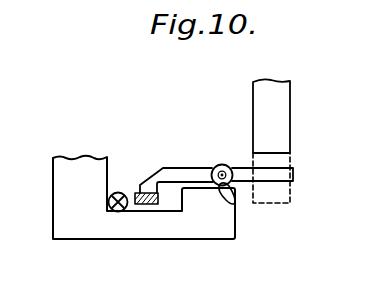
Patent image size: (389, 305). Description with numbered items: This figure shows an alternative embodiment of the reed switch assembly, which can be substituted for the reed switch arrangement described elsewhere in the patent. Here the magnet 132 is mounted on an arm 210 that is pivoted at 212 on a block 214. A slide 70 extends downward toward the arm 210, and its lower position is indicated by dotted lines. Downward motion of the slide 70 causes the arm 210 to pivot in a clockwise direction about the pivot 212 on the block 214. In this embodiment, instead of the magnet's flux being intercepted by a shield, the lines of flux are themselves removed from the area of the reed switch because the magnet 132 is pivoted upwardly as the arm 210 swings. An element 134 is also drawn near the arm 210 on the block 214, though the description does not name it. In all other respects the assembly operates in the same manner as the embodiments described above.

The slide 70 is at (284, 112).
The magnet 132 is at (138, 192).
The pivot pin 134 is at (117, 213).
The arm 210 is at (172, 167).
The pivot 212 is at (235, 202).
The block 214 is at (63, 173).